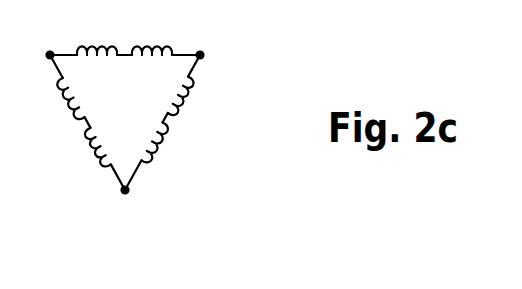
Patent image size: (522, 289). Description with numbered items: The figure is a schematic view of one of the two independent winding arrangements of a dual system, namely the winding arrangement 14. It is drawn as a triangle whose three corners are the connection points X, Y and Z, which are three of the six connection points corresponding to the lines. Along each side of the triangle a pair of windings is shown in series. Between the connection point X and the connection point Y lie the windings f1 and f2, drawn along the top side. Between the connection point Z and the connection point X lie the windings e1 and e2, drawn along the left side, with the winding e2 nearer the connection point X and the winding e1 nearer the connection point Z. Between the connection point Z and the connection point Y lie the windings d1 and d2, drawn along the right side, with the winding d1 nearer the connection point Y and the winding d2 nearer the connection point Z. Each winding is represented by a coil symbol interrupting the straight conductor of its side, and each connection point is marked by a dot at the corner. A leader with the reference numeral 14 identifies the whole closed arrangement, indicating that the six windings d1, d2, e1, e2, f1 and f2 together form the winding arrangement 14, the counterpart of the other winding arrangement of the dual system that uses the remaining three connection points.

The winding arrangement 14 is at (151, 122).
The connection point X is at (38, 52).
The connection point Y is at (212, 54).
The connection point Z is at (124, 205).
The winding f1 is at (97, 38).
The winding f2 is at (152, 38).
The winding e1 is at (89, 149).
The winding e2 is at (64, 100).
The winding d1 is at (189, 101).
The winding d2 is at (164, 149).